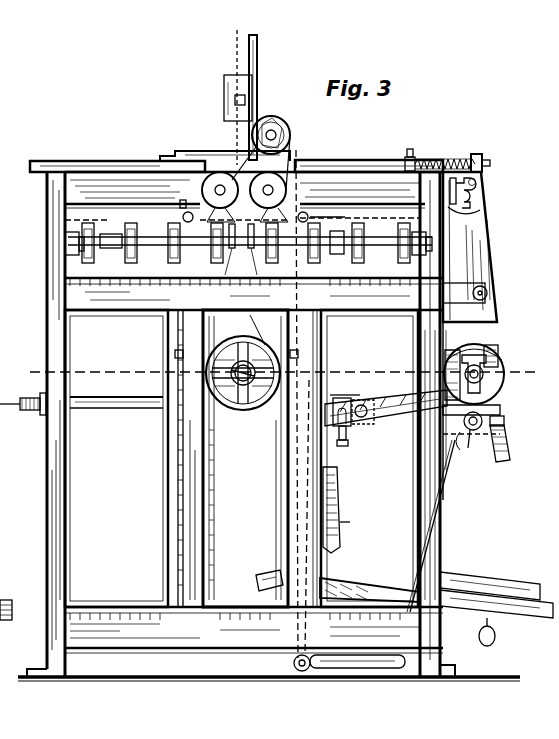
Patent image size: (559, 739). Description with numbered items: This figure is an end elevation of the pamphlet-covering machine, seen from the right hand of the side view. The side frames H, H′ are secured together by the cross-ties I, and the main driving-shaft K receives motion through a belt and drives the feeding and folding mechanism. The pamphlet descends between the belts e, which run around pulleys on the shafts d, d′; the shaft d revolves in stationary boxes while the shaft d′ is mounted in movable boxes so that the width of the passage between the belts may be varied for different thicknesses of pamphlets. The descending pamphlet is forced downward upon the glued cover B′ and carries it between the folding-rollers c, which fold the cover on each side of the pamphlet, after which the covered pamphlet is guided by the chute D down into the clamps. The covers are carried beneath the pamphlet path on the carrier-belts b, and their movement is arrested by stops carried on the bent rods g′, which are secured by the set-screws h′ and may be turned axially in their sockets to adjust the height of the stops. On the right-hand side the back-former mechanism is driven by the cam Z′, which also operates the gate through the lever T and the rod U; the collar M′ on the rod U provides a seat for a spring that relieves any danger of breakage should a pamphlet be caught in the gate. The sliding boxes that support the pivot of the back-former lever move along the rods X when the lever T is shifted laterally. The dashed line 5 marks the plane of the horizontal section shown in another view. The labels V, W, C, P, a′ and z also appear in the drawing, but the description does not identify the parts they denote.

The side frame H is at (37, 424).
The bracket V is at (213, 152).
The rod U is at (369, 151).
The collar M′ is at (435, 143).
The lever T is at (475, 247).
The cross-tie I is at (254, 465).
The carrier-belt b is at (250, 247).
The folding-roller c is at (244, 249).
The shaft bearing a′ is at (65, 240).
The shaft sleeve z is at (111, 234).
The glued cover B′ is at (332, 241).
The shaft d is at (200, 192).
The shaft d′ is at (286, 192).
The bent rod g′ is at (183, 217).
The set-screw h′ is at (268, 211).
The belt e is at (245, 211).
The shaft W is at (266, 97).
The rod C is at (233, 97).
The rod X is at (116, 458).
The chute D is at (243, 362).
The main driving-shaft K is at (207, 368).
The section line 5 is at (279, 375).
The cam Z′ is at (482, 372).
The lever P is at (500, 410).
The side frame H′ is at (457, 415).